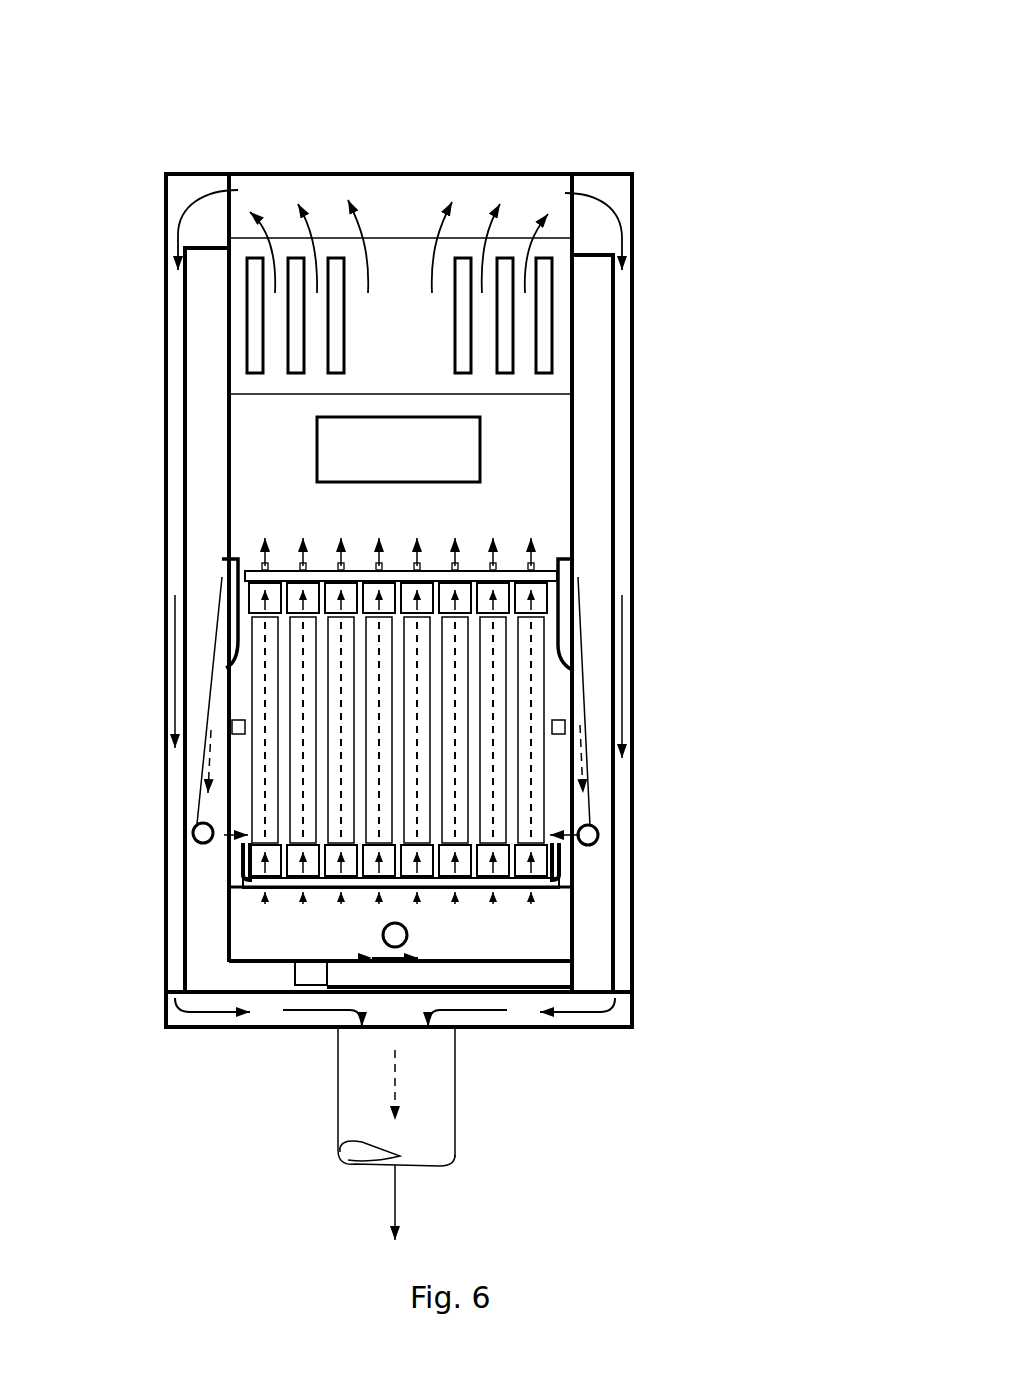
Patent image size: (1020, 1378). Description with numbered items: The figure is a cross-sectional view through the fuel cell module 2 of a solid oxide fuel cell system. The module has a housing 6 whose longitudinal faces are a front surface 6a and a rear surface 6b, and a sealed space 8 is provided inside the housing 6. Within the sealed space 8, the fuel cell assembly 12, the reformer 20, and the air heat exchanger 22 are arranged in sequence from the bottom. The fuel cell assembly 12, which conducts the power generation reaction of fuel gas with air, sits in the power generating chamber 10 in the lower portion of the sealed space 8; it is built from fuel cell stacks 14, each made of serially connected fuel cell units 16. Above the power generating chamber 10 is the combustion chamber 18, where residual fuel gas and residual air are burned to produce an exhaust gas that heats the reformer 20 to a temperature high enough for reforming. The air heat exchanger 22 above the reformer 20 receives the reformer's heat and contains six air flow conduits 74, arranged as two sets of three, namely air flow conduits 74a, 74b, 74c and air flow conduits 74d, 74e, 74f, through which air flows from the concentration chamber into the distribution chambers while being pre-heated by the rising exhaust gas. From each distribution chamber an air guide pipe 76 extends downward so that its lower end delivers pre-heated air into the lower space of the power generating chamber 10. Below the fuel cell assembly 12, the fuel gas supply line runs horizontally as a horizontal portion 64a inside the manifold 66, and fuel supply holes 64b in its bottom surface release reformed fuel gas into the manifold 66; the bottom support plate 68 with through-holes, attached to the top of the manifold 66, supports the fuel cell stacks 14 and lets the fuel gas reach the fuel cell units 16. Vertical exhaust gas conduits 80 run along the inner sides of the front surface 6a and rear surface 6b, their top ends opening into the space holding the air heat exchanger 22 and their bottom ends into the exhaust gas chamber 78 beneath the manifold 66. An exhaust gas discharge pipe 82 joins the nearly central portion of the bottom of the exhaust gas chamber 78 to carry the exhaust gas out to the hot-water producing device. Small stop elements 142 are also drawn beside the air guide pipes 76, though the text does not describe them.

The fuel cell module 2 is at (437, 589).
The housing 6 is at (392, 600).
The front surface 6a is at (165, 435).
The rear surface 6b is at (632, 412).
The sealed space 8 is at (280, 454).
The power generating chamber 10 is at (435, 721).
The fuel cell assembly 12 is at (522, 721).
The fuel cell stack 14 is at (398, 721).
The fuel cell unit 16 is at (548, 818).
The combustion chamber 18 is at (413, 519).
The reformer 20 is at (483, 455).
The air heat exchanger 22 is at (494, 207).
The horizontal portion 64a is at (410, 936).
The fuel supply hole 64b is at (385, 938).
The manifold 66 is at (572, 913).
The bottom support plate 68 is at (562, 886).
The air flow conduit 74 is at (396, 204).
The air flow conduit 74a is at (250, 257).
The air flow conduit 74b is at (294, 257).
The air flow conduit 74c is at (336, 257).
The air flow conduit 74d is at (463, 257).
The air flow conduit 74e is at (505, 257).
The air flow conduit 74f is at (546, 257).
The air guide pipe 76 is at (196, 786).
The exhaust gas chamber 78 is at (612, 1030).
The exhaust gas conduit 80 is at (170, 555).
The exhaust gas discharge pipe 82 is at (456, 1103).
The flap stop 142 is at (232, 727).